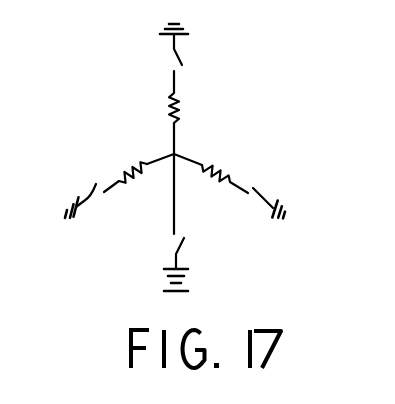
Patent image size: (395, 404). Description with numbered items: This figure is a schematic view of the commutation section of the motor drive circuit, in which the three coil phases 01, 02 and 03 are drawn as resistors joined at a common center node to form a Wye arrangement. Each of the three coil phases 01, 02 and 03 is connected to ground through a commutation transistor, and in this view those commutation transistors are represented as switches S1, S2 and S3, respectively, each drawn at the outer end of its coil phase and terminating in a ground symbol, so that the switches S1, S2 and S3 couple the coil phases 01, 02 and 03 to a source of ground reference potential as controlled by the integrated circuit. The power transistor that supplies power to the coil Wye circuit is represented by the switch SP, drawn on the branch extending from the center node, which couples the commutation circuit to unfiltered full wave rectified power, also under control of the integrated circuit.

The switch S1 is at (91, 205).
The switch S2 is at (188, 49).
The switch S3 is at (270, 194).
The switch SP is at (191, 261).
The coil phase 01 is at (125, 164).
The coil phase 02 is at (192, 97).
The coil phase 03 is at (225, 166).